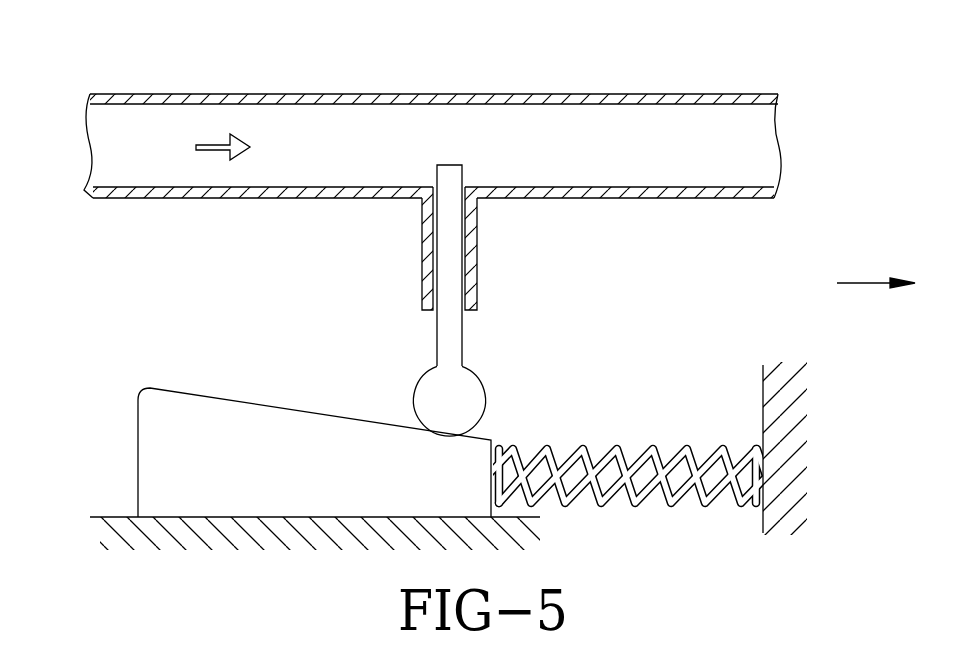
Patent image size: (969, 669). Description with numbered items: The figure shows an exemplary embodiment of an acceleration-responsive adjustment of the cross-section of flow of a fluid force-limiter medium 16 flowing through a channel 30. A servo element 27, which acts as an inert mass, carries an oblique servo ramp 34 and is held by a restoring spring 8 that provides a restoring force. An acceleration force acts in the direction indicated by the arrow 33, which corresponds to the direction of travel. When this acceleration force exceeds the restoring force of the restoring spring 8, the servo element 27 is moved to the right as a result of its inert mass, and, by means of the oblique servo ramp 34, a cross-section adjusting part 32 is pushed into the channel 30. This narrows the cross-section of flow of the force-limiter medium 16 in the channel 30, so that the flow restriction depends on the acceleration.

The channel 30 is at (455, 130).
The force-limiter medium 16 is at (383, 160).
The cross-section adjusting part 32 is at (447, 345).
The oblique servo ramp 34 is at (247, 402).
The servo element 27 is at (335, 452).
The restoring spring 8 is at (592, 456).
The arrow 33 is at (858, 282).